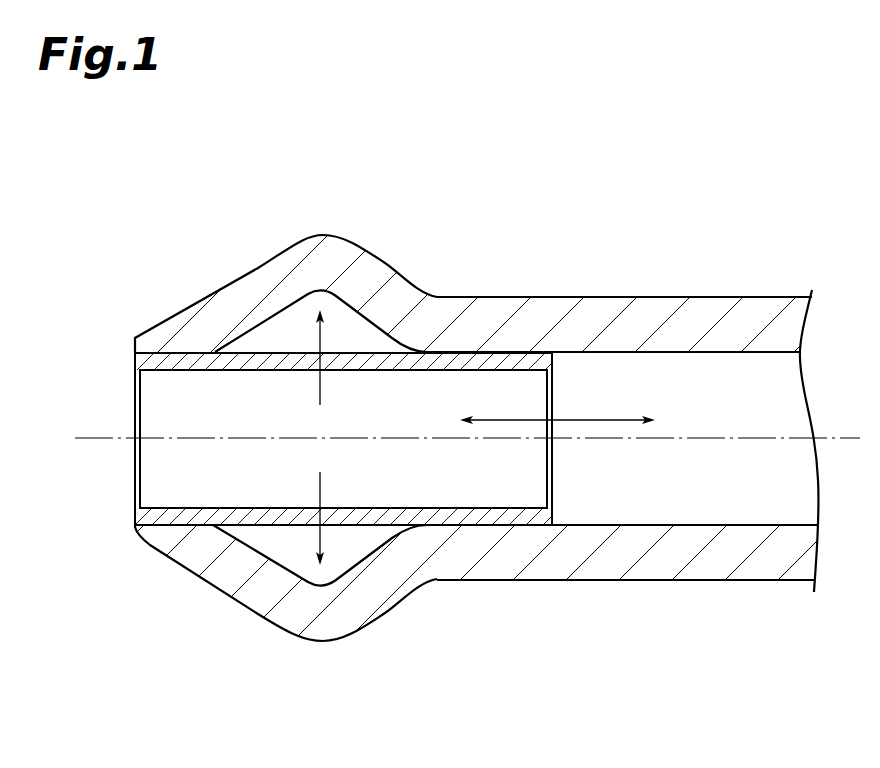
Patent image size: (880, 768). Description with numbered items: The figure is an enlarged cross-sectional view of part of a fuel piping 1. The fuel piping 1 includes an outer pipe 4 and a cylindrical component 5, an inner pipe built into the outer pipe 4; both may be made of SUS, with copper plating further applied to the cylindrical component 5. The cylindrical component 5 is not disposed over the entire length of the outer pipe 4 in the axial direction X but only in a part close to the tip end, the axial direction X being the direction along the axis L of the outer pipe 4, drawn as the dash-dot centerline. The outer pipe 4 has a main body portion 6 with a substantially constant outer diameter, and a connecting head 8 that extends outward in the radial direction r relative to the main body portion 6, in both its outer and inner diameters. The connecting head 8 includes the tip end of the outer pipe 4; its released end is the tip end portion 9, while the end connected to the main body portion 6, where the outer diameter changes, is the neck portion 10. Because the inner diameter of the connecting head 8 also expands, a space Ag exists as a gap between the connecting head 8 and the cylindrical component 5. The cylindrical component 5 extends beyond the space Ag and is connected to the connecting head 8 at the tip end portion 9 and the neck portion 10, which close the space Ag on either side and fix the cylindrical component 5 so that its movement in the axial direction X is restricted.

The fuel piping 1 is at (440, 425).
The outer pipe 4 is at (552, 297).
The cylindrical component 5 is at (340, 352).
The main body portion 6 is at (697, 582).
The connecting head 8 is at (337, 642).
The tip end portion 9 is at (133, 532).
The neck portion 10 is at (445, 567).
The axis L is at (94, 432).
The axial direction X is at (557, 391).
The radial direction r is at (327, 437).
The space Ag is at (283, 555).